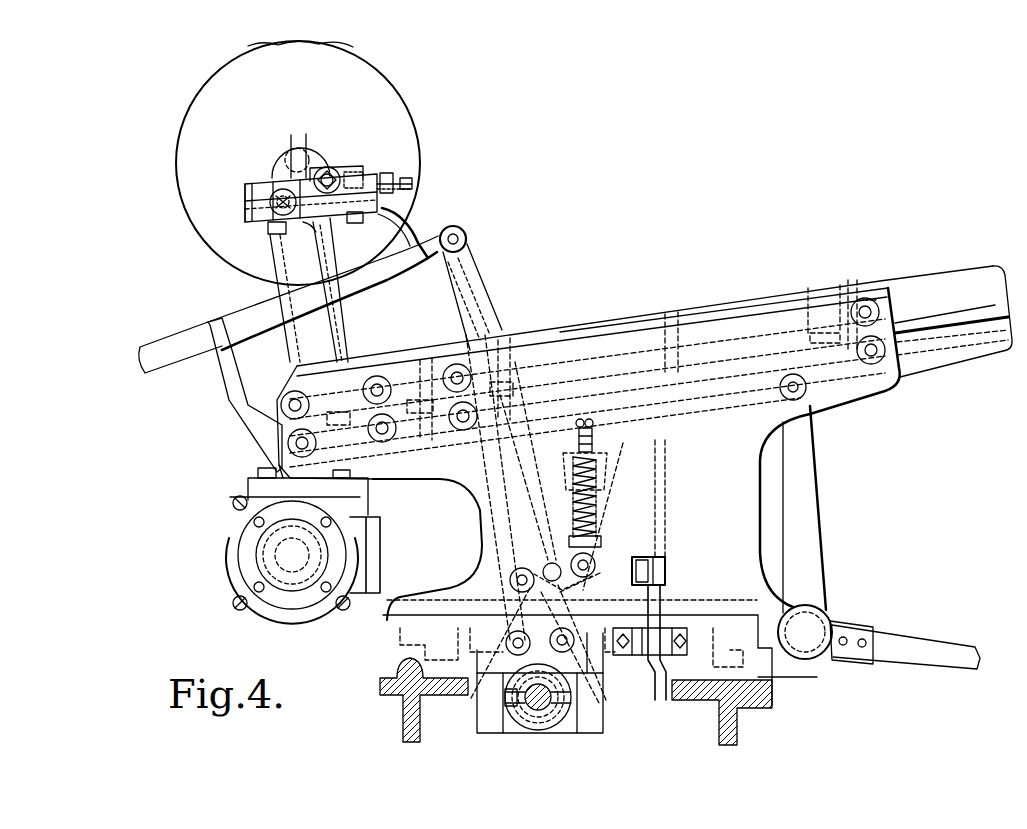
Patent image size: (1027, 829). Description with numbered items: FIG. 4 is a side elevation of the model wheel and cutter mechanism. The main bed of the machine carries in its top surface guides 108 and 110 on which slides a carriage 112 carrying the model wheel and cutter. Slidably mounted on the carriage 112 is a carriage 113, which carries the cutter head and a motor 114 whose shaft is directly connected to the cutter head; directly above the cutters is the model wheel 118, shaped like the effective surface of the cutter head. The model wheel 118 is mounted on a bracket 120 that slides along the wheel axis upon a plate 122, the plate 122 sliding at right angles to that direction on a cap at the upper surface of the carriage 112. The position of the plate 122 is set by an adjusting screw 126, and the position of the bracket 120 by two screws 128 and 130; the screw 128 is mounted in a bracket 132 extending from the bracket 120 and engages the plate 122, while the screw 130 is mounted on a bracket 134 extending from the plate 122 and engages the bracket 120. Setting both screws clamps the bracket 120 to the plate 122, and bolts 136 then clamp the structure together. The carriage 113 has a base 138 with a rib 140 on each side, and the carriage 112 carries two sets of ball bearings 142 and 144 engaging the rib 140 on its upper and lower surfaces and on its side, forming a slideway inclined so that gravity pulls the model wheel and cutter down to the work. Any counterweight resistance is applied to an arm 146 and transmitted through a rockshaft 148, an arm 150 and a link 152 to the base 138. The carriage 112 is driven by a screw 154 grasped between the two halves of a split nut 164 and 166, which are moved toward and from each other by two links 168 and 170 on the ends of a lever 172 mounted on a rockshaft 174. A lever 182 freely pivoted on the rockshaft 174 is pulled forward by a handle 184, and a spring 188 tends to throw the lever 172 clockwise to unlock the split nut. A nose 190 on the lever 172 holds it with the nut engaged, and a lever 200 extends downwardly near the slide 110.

The guide 108 is at (403, 667).
The guide 110 is at (766, 703).
The carriage 112 is at (572, 581).
The carriage 113 is at (632, 290).
The motor 114 is at (222, 573).
The model wheel 118 is at (195, 165).
The bracket 120 is at (297, 140).
The plate 122 is at (260, 200).
The adjusting screw 126 is at (412, 183).
The screw 128 is at (275, 205).
The screw 130 is at (342, 172).
The bracket 132 is at (250, 190).
The bracket 134 is at (353, 183).
The bolts 136 is at (270, 233).
The base 138 is at (951, 321).
The rib 140 is at (975, 310).
The ball bearings 142 is at (866, 298).
The ball bearings 144 is at (516, 380).
The arm 146 is at (885, 642).
The rockshaft 148 is at (810, 628).
The arm 150 is at (805, 518).
The link 152 is at (738, 406).
The screw 154 is at (537, 710).
The split nut half 164 is at (552, 722).
The split nut half 166 is at (508, 688).
The link 168 is at (470, 700).
The link 170 is at (580, 623).
The lever 172 is at (560, 590).
The rockshaft 174 is at (543, 572).
The lever 182 is at (472, 268).
The handle 184 is at (165, 355).
The spring 188 is at (593, 510).
The nose 190 is at (653, 553).
The lever 200 is at (649, 610).